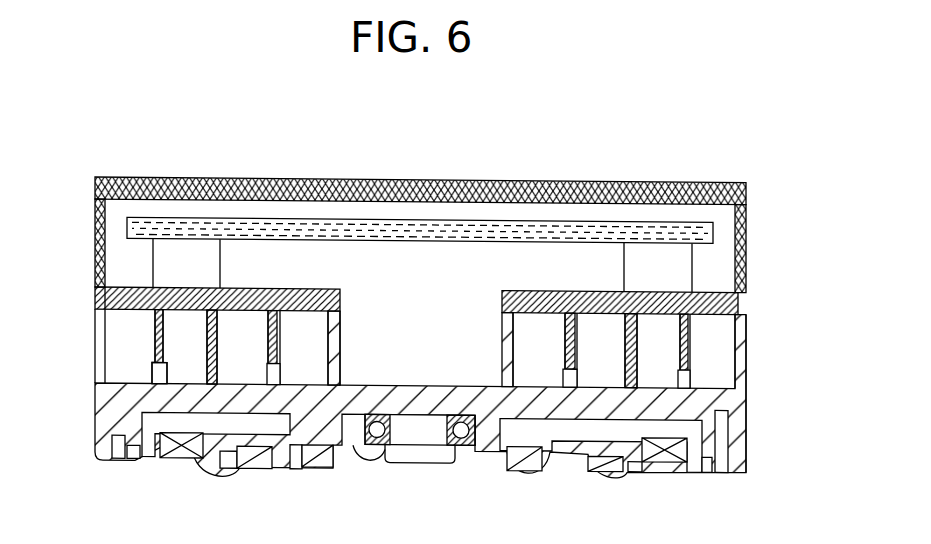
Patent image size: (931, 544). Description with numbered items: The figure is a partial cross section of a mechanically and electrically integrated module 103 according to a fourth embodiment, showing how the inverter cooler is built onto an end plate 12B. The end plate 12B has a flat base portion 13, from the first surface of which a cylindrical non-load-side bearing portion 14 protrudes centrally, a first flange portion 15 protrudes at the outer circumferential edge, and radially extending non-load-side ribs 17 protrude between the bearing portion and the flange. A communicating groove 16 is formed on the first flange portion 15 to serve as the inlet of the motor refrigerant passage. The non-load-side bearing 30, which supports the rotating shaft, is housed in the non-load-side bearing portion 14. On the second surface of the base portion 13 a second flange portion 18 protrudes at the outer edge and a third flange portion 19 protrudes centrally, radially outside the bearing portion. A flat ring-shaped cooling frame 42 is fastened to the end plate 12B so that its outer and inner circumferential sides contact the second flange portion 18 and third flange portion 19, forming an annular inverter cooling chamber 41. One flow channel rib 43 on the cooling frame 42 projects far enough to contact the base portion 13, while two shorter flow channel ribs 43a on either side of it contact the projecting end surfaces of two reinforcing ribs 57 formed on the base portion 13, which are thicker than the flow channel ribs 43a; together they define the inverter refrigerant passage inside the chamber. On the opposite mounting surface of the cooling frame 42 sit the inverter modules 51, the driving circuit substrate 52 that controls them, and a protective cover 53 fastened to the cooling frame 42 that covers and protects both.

The mechanically and electrically integrated module 103 is at (92, 109).
The end plate 12B is at (86, 421).
The base portion 13 is at (445, 395).
The non-load-side bearing portion 14 is at (352, 430).
The first flange portion 15 is at (742, 447).
The communicating groove 16 is at (722, 428).
The non-load-side ribs 17 is at (253, 427).
The second flange portion 18 is at (105, 367).
The third flange portion 19 is at (333, 367).
The non-load-side bearing 30 is at (372, 442).
The inverter cooling chamber 41 is at (703, 332).
The cooling frame 42 is at (158, 318).
The flow channel rib 43 is at (242, 312).
The flow channel ribs 43a is at (290, 318).
The inverter modules 51 is at (652, 250).
The driving circuit substrate 52 is at (548, 225).
The protective cover 53 is at (597, 181).
The reinforcing ribs 57 is at (152, 370).